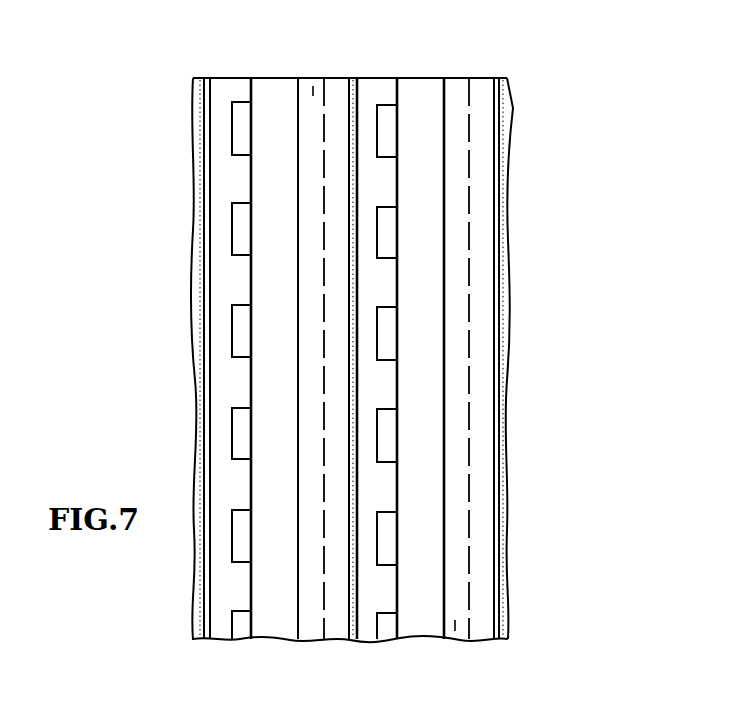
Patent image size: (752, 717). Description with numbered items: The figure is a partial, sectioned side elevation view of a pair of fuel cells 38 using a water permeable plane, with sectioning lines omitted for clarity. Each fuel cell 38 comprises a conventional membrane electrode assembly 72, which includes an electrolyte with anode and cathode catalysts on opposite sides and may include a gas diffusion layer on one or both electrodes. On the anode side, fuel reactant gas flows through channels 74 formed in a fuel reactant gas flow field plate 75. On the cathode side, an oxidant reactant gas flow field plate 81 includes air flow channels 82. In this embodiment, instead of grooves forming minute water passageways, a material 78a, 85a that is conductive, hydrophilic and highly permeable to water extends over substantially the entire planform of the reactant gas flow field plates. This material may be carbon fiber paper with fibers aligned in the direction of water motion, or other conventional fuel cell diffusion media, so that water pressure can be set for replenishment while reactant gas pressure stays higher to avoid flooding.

The fuel cell 38 is at (140, 157).
The membrane electrode assembly 72 is at (270, 87).
The channels 74 is at (242, 108).
The fuel reactant gas flow field plate 75 is at (227, 82).
The water permeable material 78a is at (207, 362).
The oxidant reactant gas flow field plate 81 is at (337, 82).
The air flow channels 82 is at (311, 90).
The water permeable material 85a is at (353, 392).